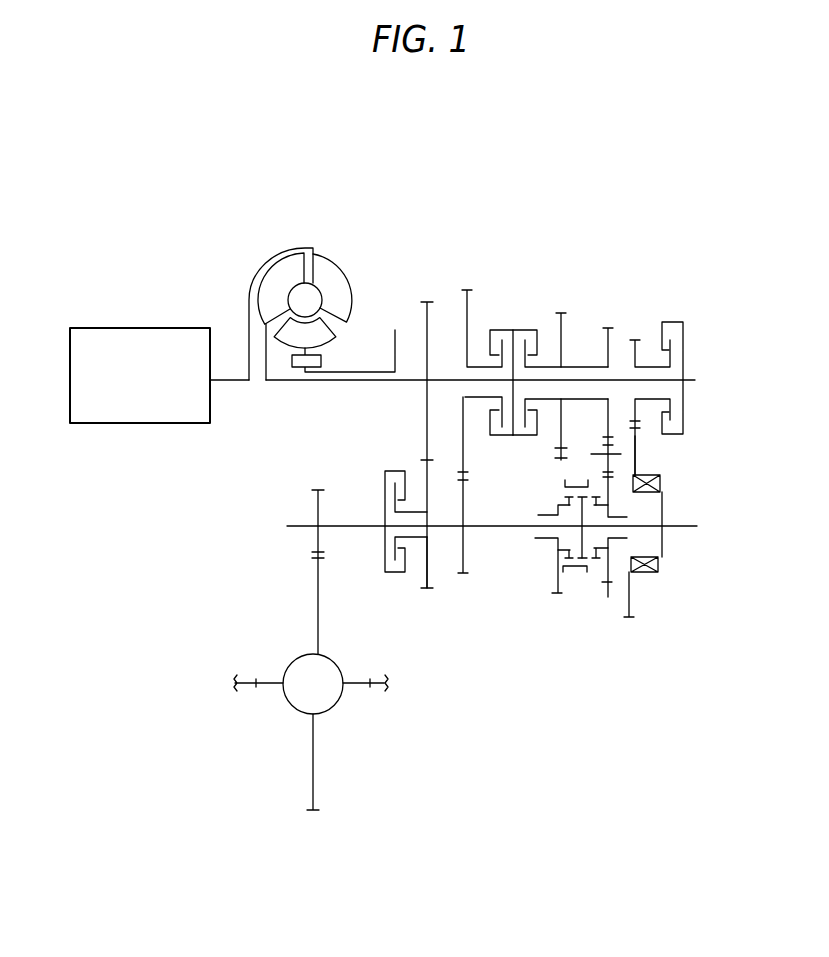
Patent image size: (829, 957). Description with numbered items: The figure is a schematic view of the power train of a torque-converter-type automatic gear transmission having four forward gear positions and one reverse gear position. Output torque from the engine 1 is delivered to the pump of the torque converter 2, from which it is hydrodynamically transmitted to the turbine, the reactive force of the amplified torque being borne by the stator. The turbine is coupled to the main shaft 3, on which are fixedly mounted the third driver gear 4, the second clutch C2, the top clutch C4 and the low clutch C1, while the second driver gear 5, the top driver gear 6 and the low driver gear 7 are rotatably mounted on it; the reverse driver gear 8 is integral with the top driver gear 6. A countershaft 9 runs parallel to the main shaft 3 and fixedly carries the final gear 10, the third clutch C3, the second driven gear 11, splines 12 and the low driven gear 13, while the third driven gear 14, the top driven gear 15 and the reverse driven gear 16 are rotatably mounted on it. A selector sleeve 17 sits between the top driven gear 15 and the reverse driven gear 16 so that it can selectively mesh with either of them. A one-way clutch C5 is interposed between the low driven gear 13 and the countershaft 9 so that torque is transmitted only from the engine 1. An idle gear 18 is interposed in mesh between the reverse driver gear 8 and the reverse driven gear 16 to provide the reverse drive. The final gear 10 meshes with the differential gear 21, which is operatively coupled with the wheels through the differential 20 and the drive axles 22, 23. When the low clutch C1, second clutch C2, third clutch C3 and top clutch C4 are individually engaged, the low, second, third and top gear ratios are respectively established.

The engine 1 is at (142, 328).
The torque converter 2 is at (332, 243).
The main shaft 3 is at (372, 382).
The third driver gear 4 is at (427, 302).
The second driver gear 5 is at (467, 290).
The top driver gear 6 is at (561, 313).
The low driver gear 7 is at (635, 340).
The reverse driver gear 8 is at (608, 328).
The countershaft 9 is at (352, 526).
The final gear 10 is at (318, 490).
The second driven gear 11 is at (463, 575).
The splines 12 is at (582, 526).
The low driven gear 13 is at (631, 619).
The third driven gear 14 is at (427, 590).
The top driven gear 15 is at (556, 594).
The reverse driven gear 16 is at (607, 598).
The selector sleeve 17 is at (578, 573).
The idle gear 18 is at (612, 438).
The differential 20 is at (292, 710).
The differential gear 21 is at (313, 812).
The drive axle 22 is at (256, 681).
The drive axle 23 is at (370, 689).
The low clutch C1 is at (683, 322).
The second clutch C2 is at (491, 330).
The third clutch C3 is at (393, 574).
The top clutch C4 is at (533, 330).
The one-way clutch C5 is at (647, 573).